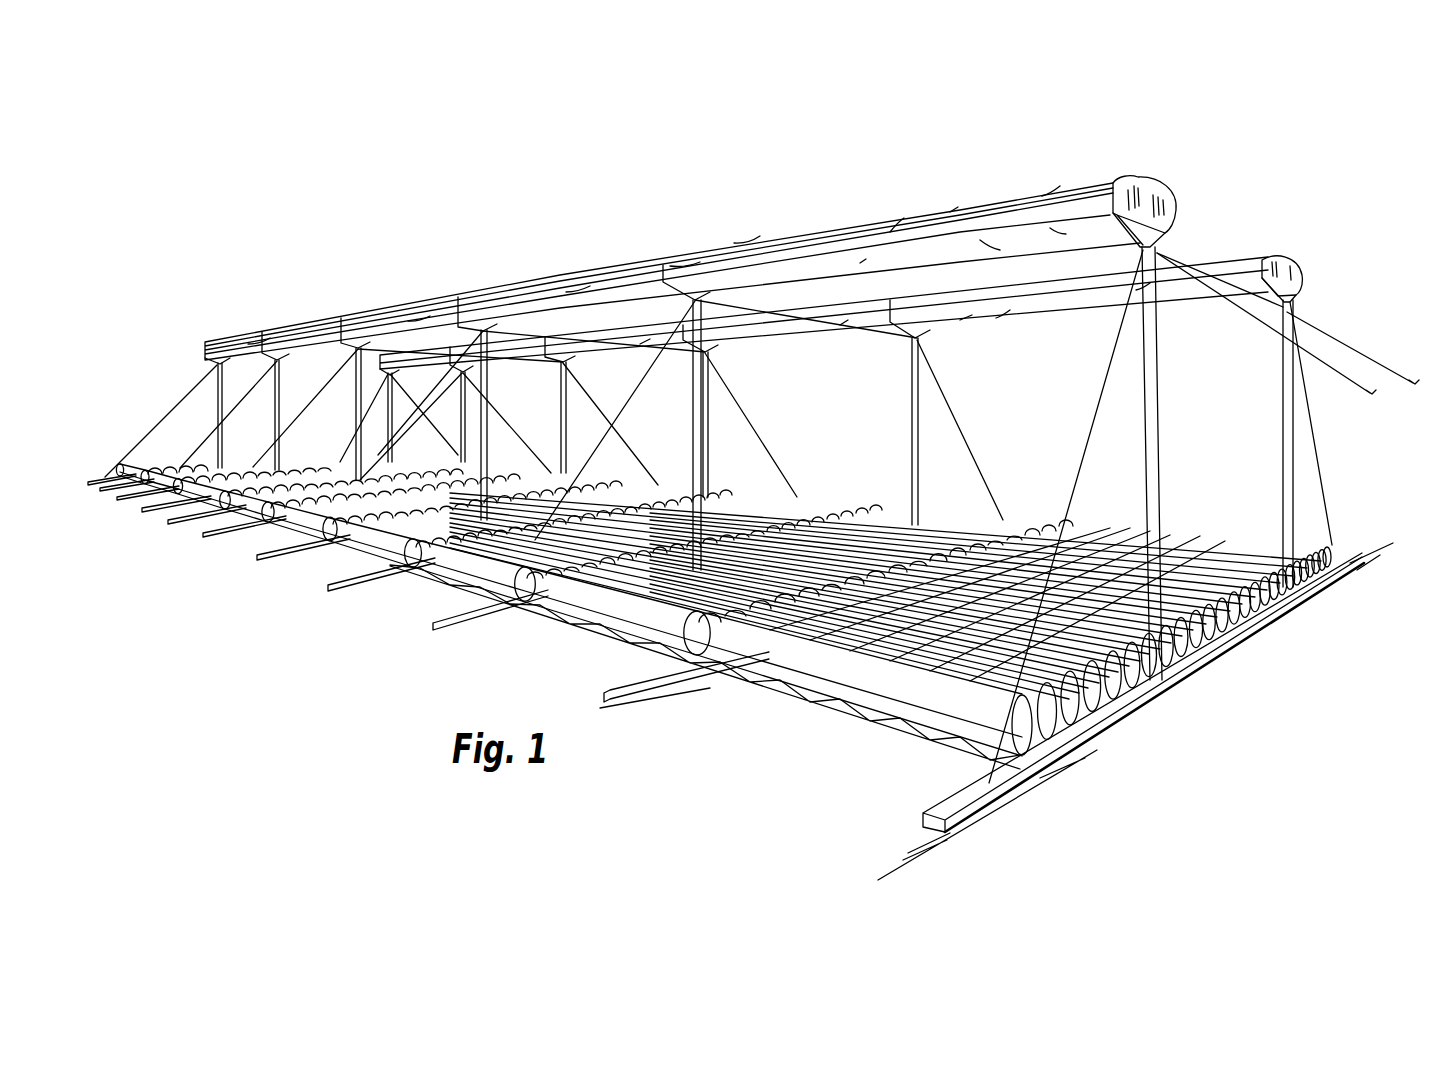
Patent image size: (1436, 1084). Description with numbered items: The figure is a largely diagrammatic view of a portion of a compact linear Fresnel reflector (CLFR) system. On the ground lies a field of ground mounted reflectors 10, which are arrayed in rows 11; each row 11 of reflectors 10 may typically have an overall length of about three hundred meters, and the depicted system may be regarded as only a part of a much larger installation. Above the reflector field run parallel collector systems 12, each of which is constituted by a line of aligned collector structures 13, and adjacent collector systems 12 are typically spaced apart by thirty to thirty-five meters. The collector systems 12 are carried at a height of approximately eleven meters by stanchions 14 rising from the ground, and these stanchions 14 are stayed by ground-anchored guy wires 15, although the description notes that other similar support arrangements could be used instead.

The ground mounted reflectors 10 is at (875, 697).
The rows 11 is at (1033, 752).
The collector systems 12 is at (893, 232).
The collector structures 13 is at (1183, 185).
The stanchions 14 is at (1158, 438).
The guy wires 15 is at (162, 420).